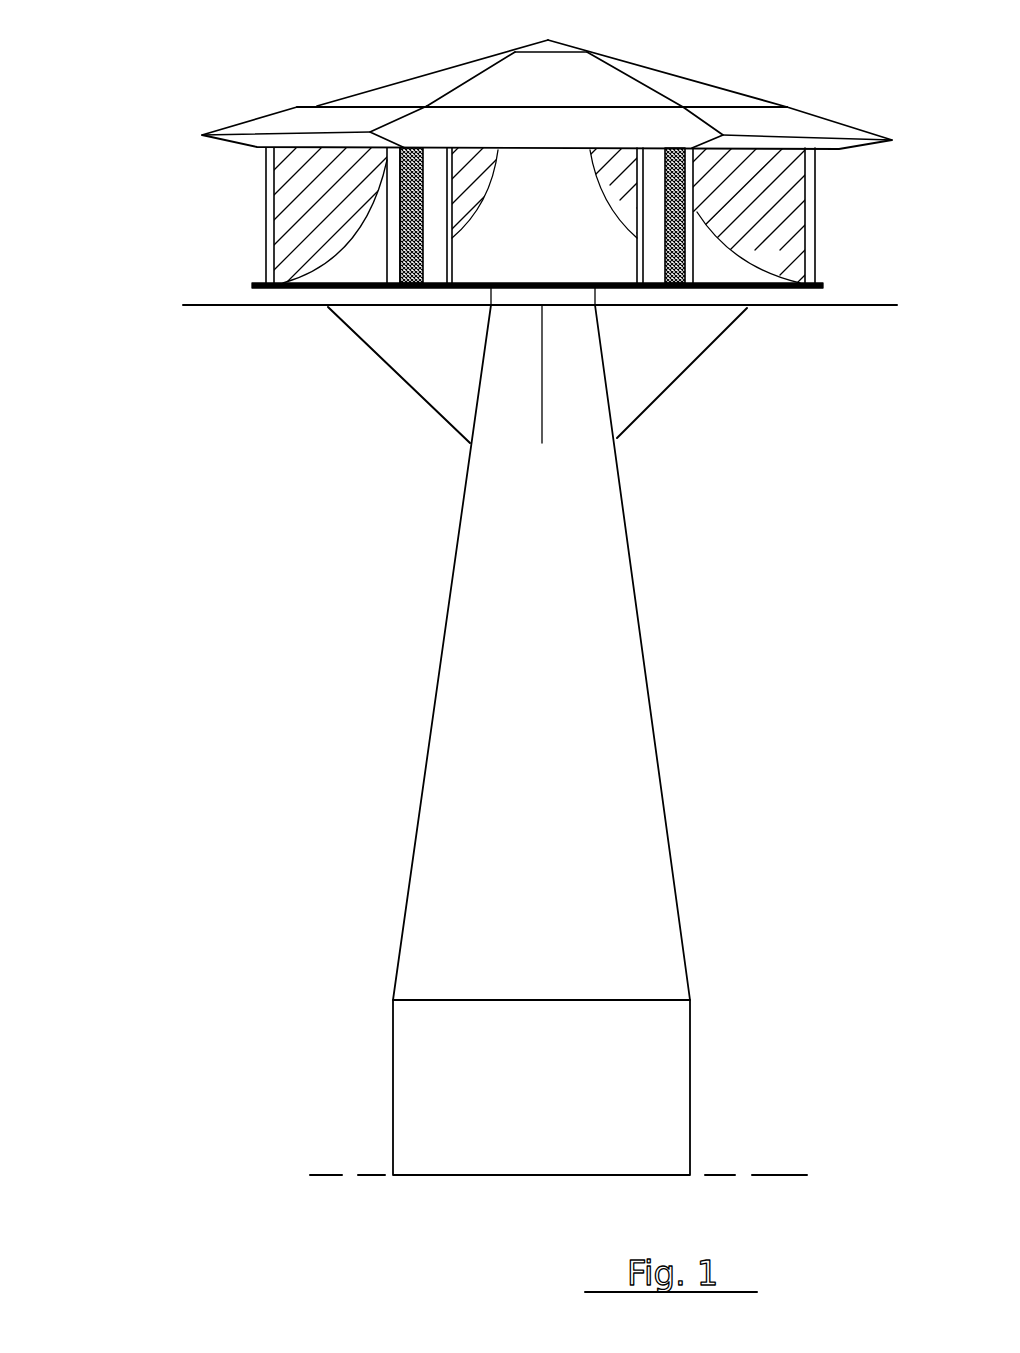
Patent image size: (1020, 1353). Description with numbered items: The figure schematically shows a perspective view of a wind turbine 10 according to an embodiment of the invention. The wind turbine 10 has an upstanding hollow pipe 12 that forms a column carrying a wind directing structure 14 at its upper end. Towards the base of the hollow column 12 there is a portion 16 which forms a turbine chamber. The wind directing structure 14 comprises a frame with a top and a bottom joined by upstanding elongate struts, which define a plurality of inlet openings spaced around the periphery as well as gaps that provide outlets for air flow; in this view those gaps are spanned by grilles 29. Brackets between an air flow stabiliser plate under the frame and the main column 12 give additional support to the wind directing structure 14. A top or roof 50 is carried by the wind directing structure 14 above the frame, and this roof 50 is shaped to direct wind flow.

The wind turbine 10 is at (766, 622).
The hollow pipe 12 is at (670, 838).
The wind directing structure 14 is at (468, 200).
The portion forming a turbine chamber 16 is at (700, 1077).
The grilles 29 is at (690, 288).
The roof 50 is at (700, 72).